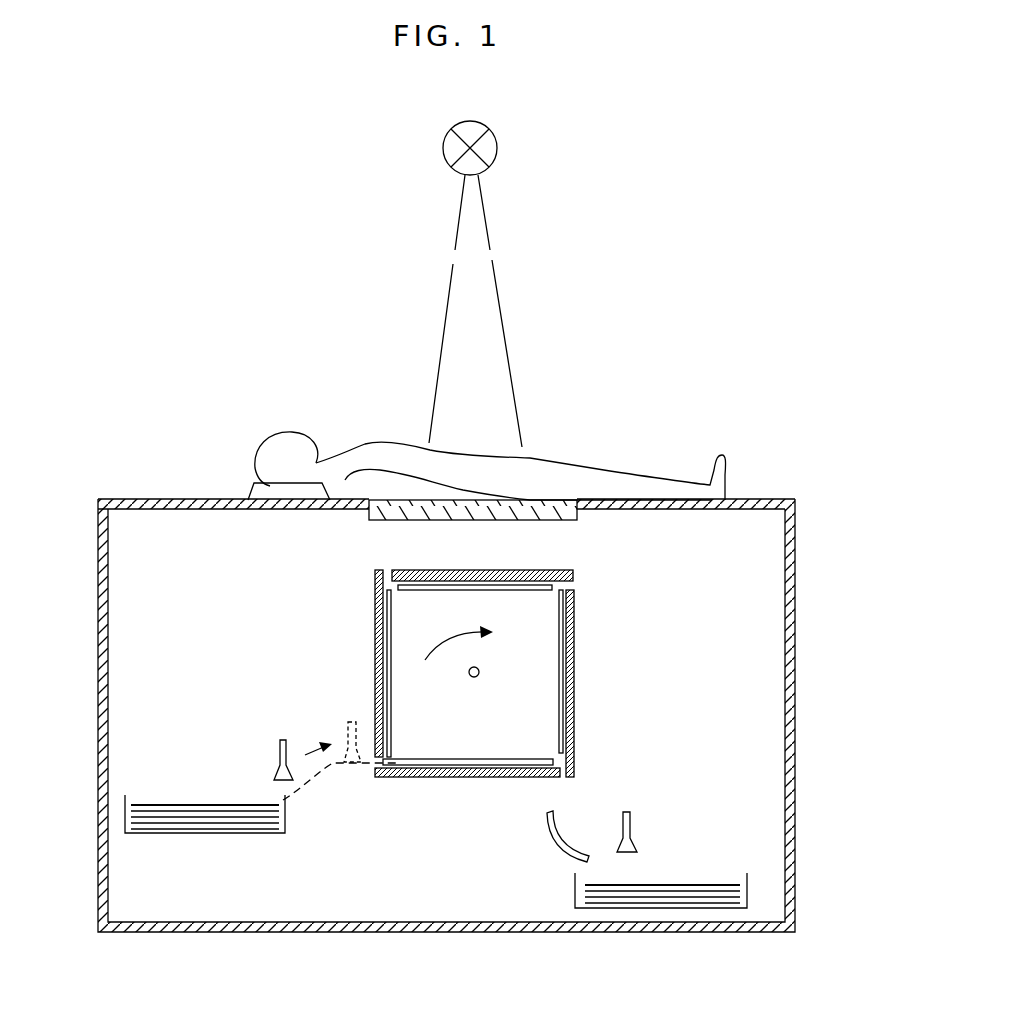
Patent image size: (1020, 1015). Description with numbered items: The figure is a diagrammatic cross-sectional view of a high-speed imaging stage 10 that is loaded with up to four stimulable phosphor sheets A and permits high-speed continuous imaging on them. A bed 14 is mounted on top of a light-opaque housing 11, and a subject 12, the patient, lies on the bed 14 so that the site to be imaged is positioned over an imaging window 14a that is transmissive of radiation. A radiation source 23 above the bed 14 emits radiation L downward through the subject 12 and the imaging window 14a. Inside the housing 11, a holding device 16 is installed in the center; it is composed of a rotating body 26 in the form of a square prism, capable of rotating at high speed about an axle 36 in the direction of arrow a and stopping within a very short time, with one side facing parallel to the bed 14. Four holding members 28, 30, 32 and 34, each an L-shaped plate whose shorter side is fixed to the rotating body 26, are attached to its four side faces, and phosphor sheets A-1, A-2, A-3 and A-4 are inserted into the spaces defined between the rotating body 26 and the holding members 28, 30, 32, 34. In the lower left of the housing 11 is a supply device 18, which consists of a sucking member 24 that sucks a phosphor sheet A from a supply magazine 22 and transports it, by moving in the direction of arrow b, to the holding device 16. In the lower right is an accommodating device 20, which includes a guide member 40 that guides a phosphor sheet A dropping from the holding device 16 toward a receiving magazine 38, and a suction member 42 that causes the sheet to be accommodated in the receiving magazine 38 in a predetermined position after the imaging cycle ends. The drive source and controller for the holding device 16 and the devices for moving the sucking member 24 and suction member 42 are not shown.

The high-speed imaging stage 10 is at (252, 310).
The light-opaque housing 11 is at (755, 505).
The subject 12 is at (381, 446).
The bed 14 is at (335, 424).
The imaging window 14a is at (558, 507).
The holding device 16 is at (703, 651).
The supply device 18 is at (183, 690).
The accommodating device 20 is at (698, 786).
The supply magazine 22 is at (195, 835).
The radiation source 23 is at (490, 152).
The sucking member 24 is at (282, 762).
The rotating body 26 is at (461, 721).
The holding member 28 is at (470, 780).
The holding member 30 is at (573, 645).
The holding member 32 is at (573, 572).
The holding member 34 is at (375, 663).
The axle 36 is at (470, 678).
The receiving magazine 38 is at (627, 910).
The guide member 40 is at (560, 843).
The suction member 42 is at (632, 828).
The radiation L is at (497, 284).
The stimulable phosphor sheet A is at (185, 805).
The phosphor sheet A-1 is at (525, 779).
The phosphor sheet A-2 is at (567, 685).
The phosphor sheet A-3 is at (540, 590).
The phosphor sheet A-4 is at (375, 608).
The arrow a is at (459, 630).
The arrow b is at (318, 736).